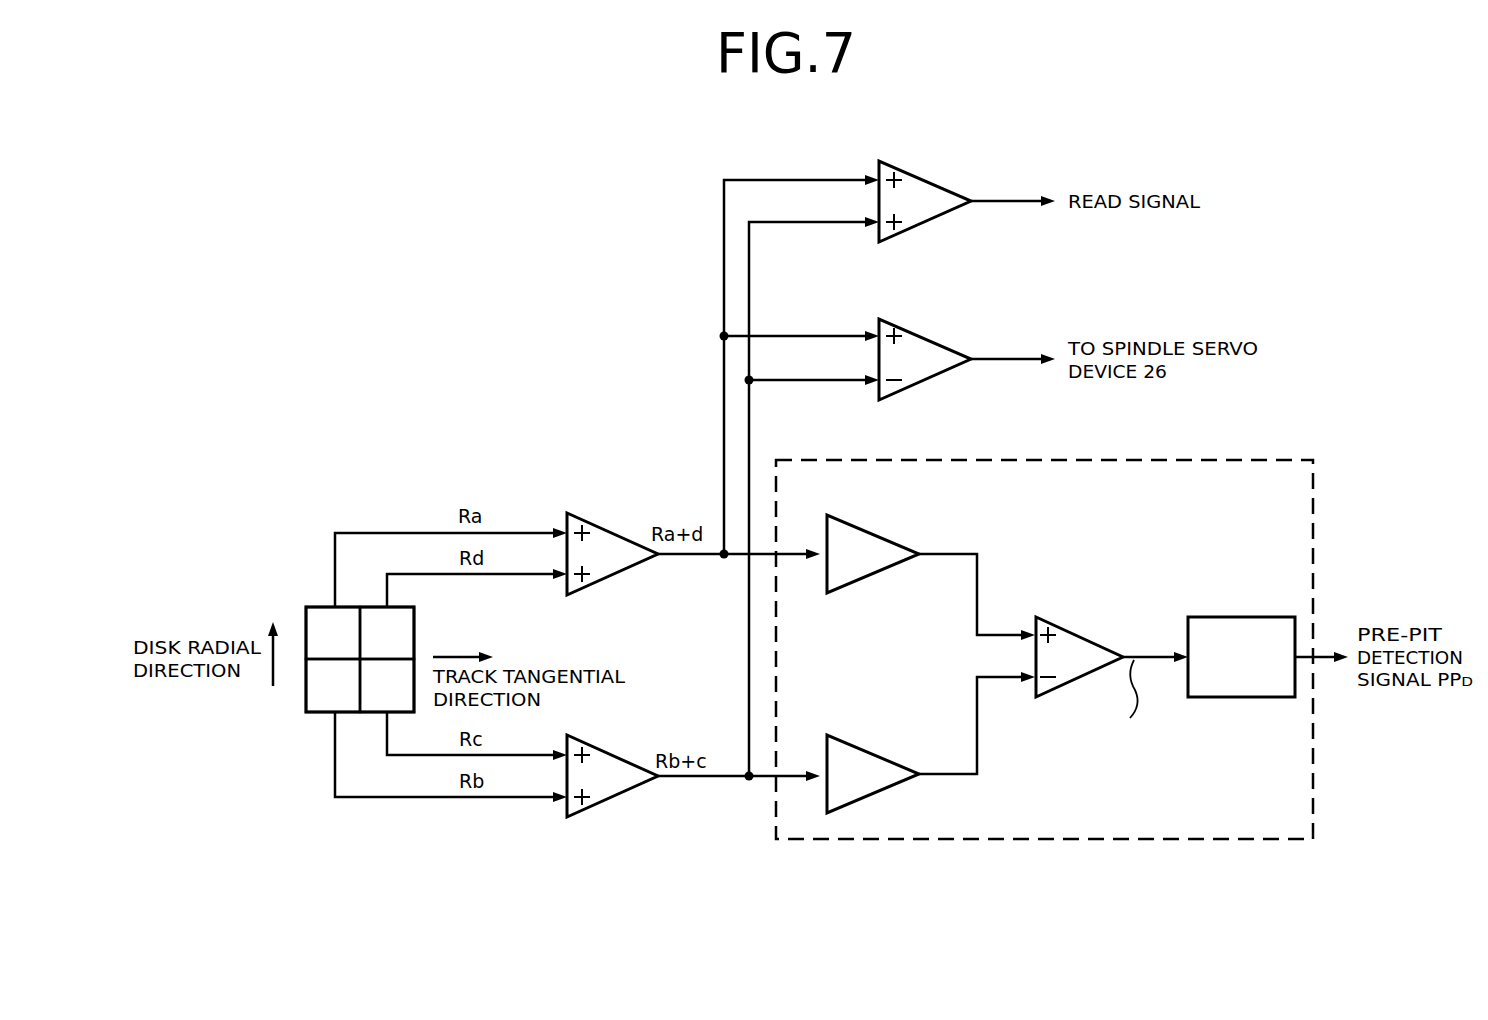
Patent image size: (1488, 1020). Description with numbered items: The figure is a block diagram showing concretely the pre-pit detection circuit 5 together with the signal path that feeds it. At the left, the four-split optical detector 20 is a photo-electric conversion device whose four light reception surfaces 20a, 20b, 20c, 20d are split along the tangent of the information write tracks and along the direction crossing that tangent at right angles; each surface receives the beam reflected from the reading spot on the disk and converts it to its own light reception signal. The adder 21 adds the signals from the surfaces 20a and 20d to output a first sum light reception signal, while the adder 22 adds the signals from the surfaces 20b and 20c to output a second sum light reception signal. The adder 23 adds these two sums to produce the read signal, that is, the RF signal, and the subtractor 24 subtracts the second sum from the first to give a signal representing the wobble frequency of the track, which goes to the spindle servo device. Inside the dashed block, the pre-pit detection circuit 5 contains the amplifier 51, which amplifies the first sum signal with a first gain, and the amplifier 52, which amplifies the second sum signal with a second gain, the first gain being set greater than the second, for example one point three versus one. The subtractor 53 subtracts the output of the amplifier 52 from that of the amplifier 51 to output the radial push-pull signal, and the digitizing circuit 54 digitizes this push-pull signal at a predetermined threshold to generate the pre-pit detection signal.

The pre-pit detection circuit 5 is at (1315, 508).
The four-split optical detector 20 is at (424, 631).
The light reception surface 20a is at (317, 606).
The light reception surface 20b is at (317, 713).
The light reception surface 20c is at (371, 713).
The light reception surface 20d is at (376, 606).
The adder 21 is at (633, 540).
The adder 22 is at (623, 794).
The adder 23 is at (948, 196).
The subtractor 24 is at (949, 352).
The amplifier 51 is at (900, 542).
The amplifier 52 is at (892, 761).
The subtractor 53 is at (1094, 640).
The digitizing circuit 54 is at (1255, 616).